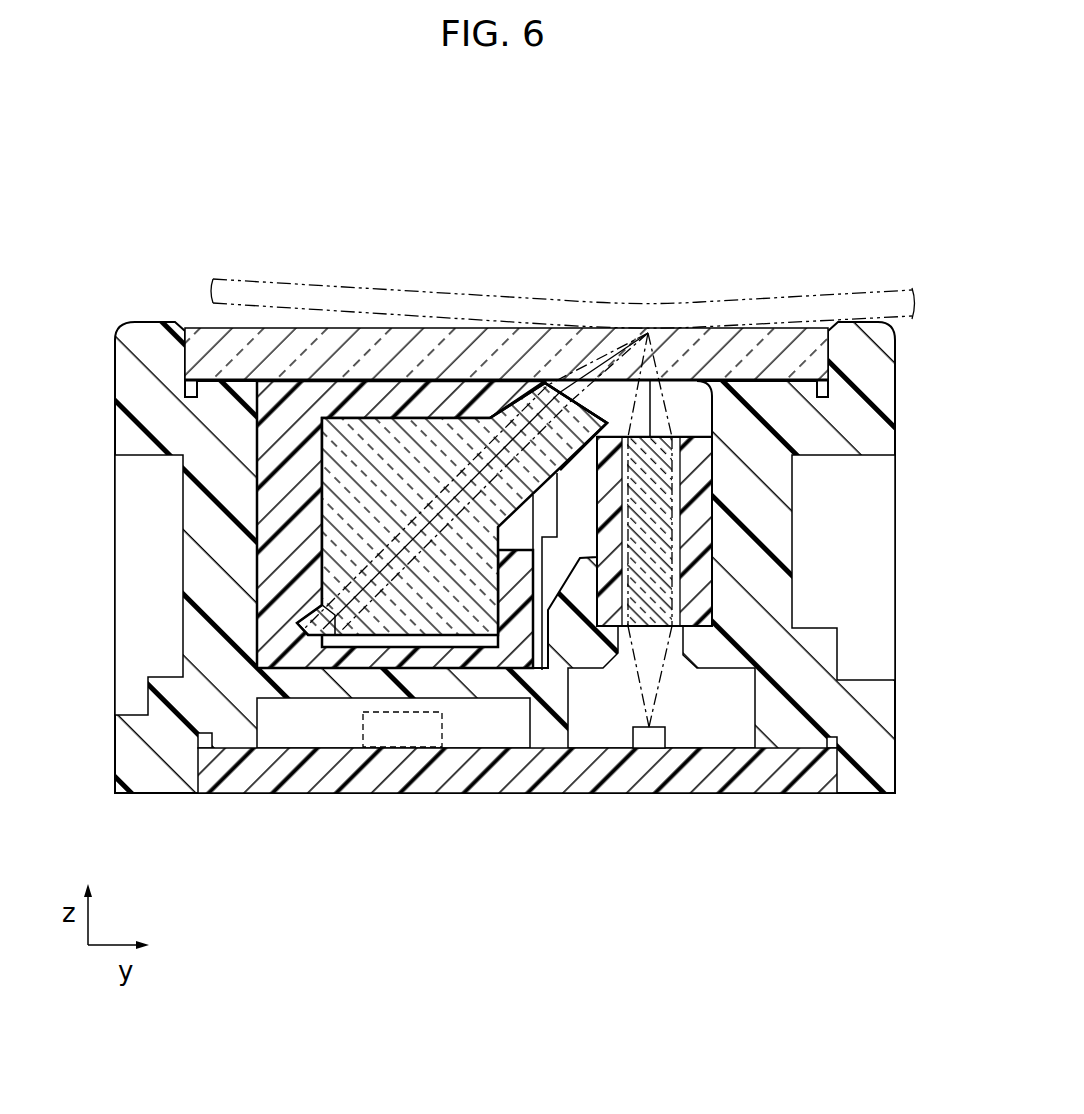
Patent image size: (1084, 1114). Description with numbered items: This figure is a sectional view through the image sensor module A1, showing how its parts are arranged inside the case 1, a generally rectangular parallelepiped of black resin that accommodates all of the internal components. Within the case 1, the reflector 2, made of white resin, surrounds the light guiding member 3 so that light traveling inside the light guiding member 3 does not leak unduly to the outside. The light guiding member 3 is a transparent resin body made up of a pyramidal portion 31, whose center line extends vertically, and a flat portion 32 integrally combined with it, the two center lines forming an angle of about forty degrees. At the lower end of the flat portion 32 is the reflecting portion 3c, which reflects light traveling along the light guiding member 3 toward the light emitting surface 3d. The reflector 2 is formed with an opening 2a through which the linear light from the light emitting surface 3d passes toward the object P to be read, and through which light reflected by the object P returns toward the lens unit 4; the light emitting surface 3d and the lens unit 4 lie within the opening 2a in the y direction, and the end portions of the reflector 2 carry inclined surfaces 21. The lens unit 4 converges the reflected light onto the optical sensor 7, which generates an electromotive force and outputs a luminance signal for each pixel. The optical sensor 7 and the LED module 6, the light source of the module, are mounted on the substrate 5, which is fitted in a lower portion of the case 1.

The case 1 is at (137, 412).
The reflector 2 is at (392, 460).
The opening 2a is at (622, 403).
The inclined surface 21 is at (685, 410).
The light guiding member 3 is at (464, 536).
The pyramidal portion 31 is at (385, 430).
The flat portion 32 is at (520, 407).
The reflecting portion 3c is at (330, 633).
The light emitting surface 3d is at (578, 383).
The lens unit 4 is at (715, 518).
The substrate 5 is at (528, 775).
The LED module 6 is at (420, 745).
The optical sensor 7 is at (650, 740).
The object P is at (835, 292).
The image sensor module A1 is at (148, 234).